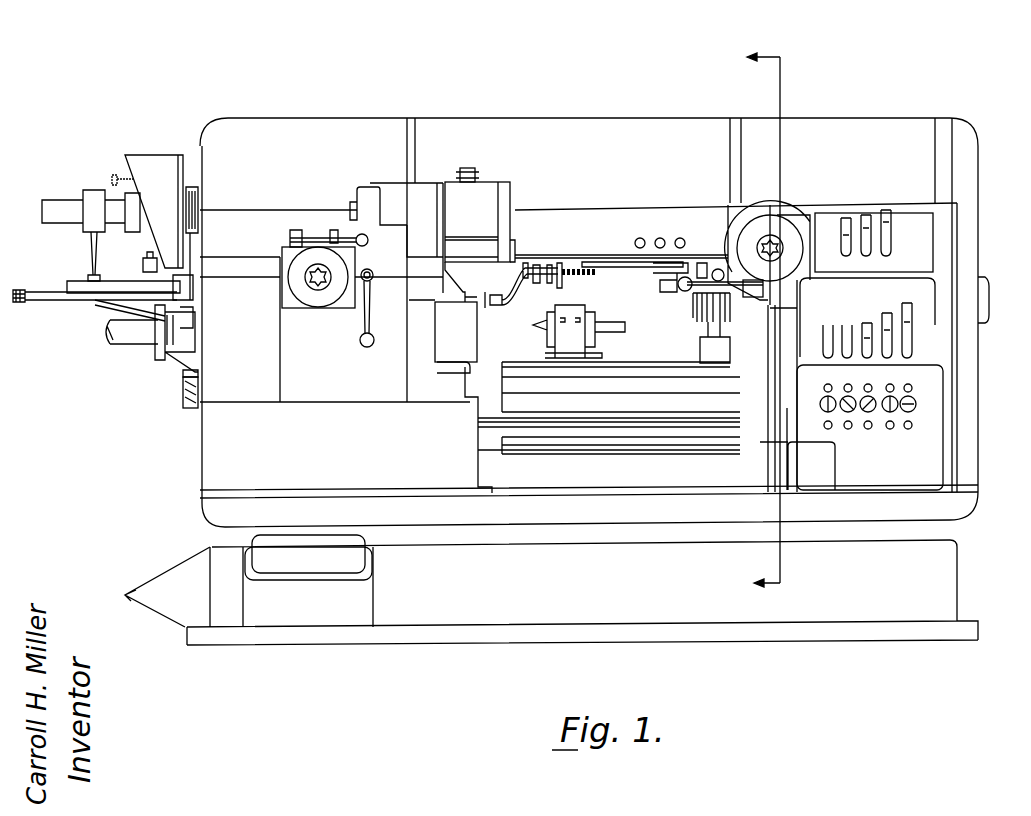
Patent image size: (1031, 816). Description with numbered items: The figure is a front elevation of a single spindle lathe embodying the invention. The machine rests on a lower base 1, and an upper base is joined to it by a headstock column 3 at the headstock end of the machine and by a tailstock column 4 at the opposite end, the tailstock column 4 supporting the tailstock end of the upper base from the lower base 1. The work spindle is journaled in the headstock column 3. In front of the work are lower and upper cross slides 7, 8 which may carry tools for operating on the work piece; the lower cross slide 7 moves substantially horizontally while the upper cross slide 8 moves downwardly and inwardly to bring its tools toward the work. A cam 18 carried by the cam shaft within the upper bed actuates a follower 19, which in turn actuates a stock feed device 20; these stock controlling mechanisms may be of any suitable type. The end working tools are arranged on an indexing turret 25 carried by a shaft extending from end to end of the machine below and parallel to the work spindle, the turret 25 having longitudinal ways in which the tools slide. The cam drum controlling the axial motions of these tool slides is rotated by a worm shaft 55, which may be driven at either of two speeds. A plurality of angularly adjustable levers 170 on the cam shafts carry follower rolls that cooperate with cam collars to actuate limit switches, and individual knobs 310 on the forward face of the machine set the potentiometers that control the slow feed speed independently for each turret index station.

The lower base 1 is at (440, 615).
The headstock column 3 is at (640, 130).
The tailstock column 4 is at (876, 323).
The lower cross slide 7 is at (463, 348).
The upper cross slide 8 is at (480, 198).
The cam 18 is at (165, 165).
The follower 19 is at (143, 264).
The stock feed device 20 is at (157, 342).
The indexing turret 25 is at (642, 428).
The worm shaft 55 is at (779, 240).
The levers 170 is at (886, 210).
The knobs 310 is at (826, 410).